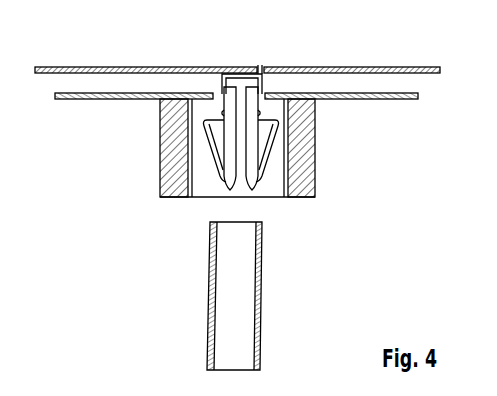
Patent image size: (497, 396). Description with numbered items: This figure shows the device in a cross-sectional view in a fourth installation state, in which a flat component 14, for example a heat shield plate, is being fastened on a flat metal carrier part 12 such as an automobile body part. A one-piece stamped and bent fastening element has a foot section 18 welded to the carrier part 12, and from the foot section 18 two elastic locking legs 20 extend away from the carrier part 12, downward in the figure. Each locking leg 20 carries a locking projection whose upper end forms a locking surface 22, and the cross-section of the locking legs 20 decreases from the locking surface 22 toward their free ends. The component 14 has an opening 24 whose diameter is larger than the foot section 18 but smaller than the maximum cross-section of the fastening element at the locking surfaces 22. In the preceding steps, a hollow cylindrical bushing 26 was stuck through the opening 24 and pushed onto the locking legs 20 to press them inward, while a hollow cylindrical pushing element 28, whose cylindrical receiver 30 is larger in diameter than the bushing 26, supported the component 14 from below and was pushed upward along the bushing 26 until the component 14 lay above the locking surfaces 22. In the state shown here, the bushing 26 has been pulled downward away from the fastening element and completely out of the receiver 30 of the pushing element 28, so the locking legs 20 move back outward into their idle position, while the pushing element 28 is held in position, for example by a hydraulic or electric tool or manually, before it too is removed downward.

The carrier part 12 is at (375, 66).
The component 14 is at (100, 100).
The foot section 18 is at (261, 68).
The locking legs 20 is at (210, 145).
The locking surface 22 is at (210, 120).
The opening 24 is at (221, 75).
The bushing 26 is at (263, 285).
The pushing element 28 is at (308, 128).
The cylindrical receiver 30 is at (278, 190).